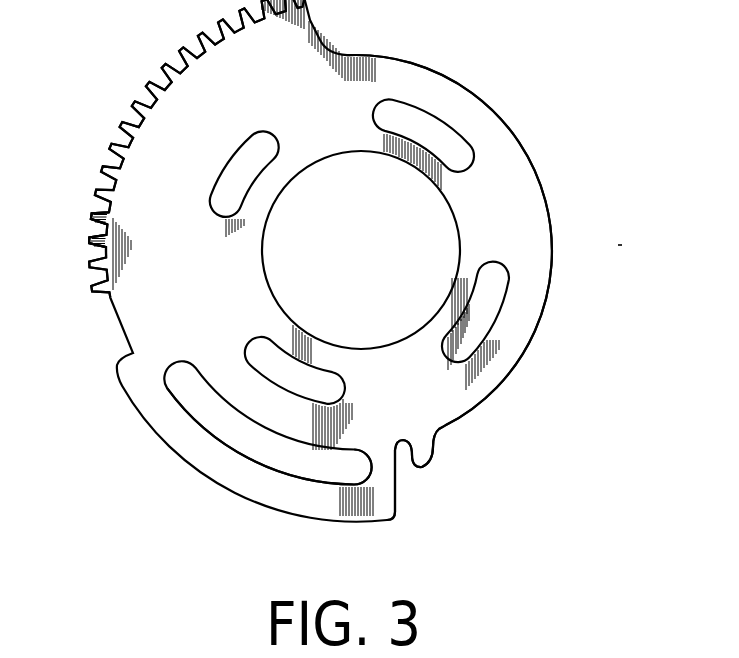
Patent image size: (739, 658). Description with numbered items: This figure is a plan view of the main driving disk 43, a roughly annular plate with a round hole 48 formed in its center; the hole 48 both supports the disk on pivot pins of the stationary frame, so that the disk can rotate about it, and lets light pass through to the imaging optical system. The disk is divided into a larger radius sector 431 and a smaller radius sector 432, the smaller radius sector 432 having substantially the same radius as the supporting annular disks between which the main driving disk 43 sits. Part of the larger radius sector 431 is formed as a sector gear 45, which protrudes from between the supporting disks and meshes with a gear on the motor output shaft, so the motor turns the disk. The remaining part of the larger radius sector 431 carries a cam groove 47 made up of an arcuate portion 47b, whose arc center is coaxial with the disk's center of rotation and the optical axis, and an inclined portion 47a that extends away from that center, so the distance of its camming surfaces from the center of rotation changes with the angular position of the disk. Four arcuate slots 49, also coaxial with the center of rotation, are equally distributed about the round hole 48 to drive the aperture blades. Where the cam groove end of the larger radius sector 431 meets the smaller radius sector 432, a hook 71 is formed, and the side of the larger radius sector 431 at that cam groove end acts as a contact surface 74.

The main driving disk 43 is at (496, 111).
The larger radius sector 431 is at (148, 225).
The smaller radius sector 432 is at (520, 193).
The sector gear 45 is at (136, 109).
The cam groove 47 is at (168, 385).
The inclined portion 47a is at (339, 484).
The arcuate portion 47b is at (227, 435).
The round hole 48 is at (337, 151).
The arcuate slots 49 is at (408, 107).
The hook 71 is at (428, 457).
The contact surface 74 is at (395, 505).